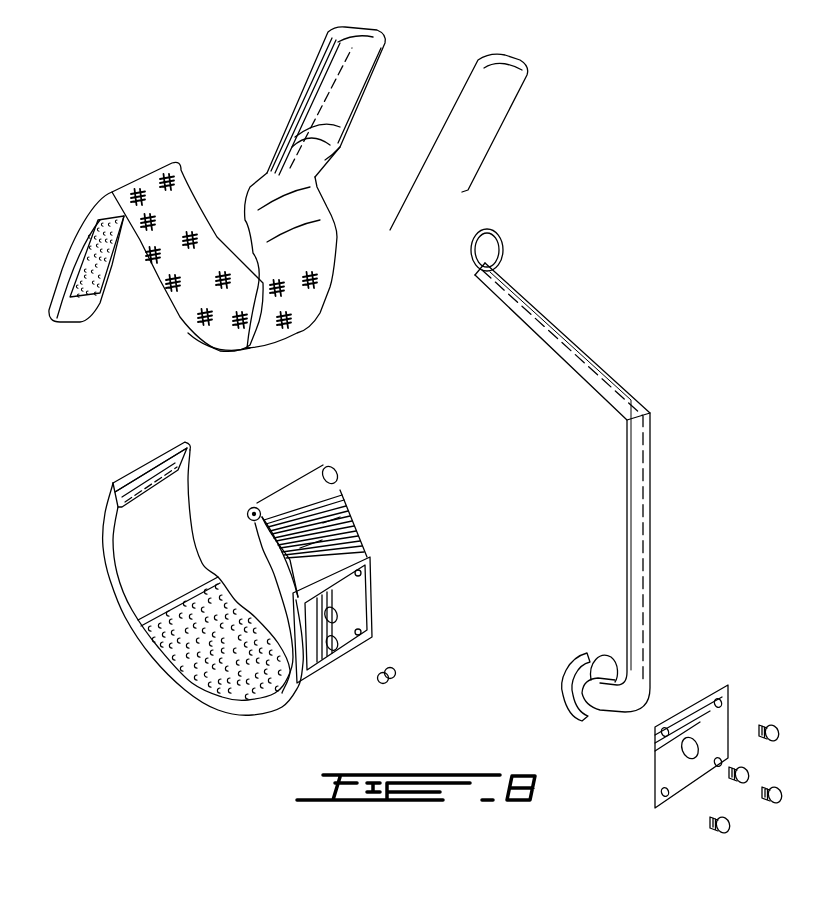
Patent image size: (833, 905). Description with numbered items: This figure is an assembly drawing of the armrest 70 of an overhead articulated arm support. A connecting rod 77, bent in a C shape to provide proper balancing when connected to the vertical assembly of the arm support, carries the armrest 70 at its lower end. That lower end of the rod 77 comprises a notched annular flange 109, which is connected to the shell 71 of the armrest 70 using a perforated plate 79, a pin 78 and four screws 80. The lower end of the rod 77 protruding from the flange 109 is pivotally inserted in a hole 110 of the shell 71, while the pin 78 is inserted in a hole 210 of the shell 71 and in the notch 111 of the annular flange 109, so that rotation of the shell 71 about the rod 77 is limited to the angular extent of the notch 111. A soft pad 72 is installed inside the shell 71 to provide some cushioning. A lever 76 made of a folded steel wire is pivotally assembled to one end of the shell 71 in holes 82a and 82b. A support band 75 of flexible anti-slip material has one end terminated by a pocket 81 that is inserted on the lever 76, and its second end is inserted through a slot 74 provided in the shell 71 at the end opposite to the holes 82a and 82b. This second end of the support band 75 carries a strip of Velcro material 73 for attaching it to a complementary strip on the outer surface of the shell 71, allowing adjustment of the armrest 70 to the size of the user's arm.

The armrest 70 is at (598, 278).
The shell 71 is at (322, 518).
The soft pad 72 is at (180, 640).
The strip of Velcro material 73 is at (80, 266).
The slot 74 is at (118, 493).
The support band 75 is at (190, 205).
The lever 76 is at (520, 93).
The connecting rod 77 is at (590, 372).
The pin 78 is at (388, 667).
The perforated plate 79 is at (700, 697).
The screws 80 is at (779, 738).
The pocket 81 is at (350, 70).
The hole 82a is at (250, 510).
The hole 82b is at (333, 477).
The notched annular flange 109 is at (592, 658).
The hole 110 is at (340, 612).
The notch 111 is at (580, 716).
The hole 210 is at (334, 651).